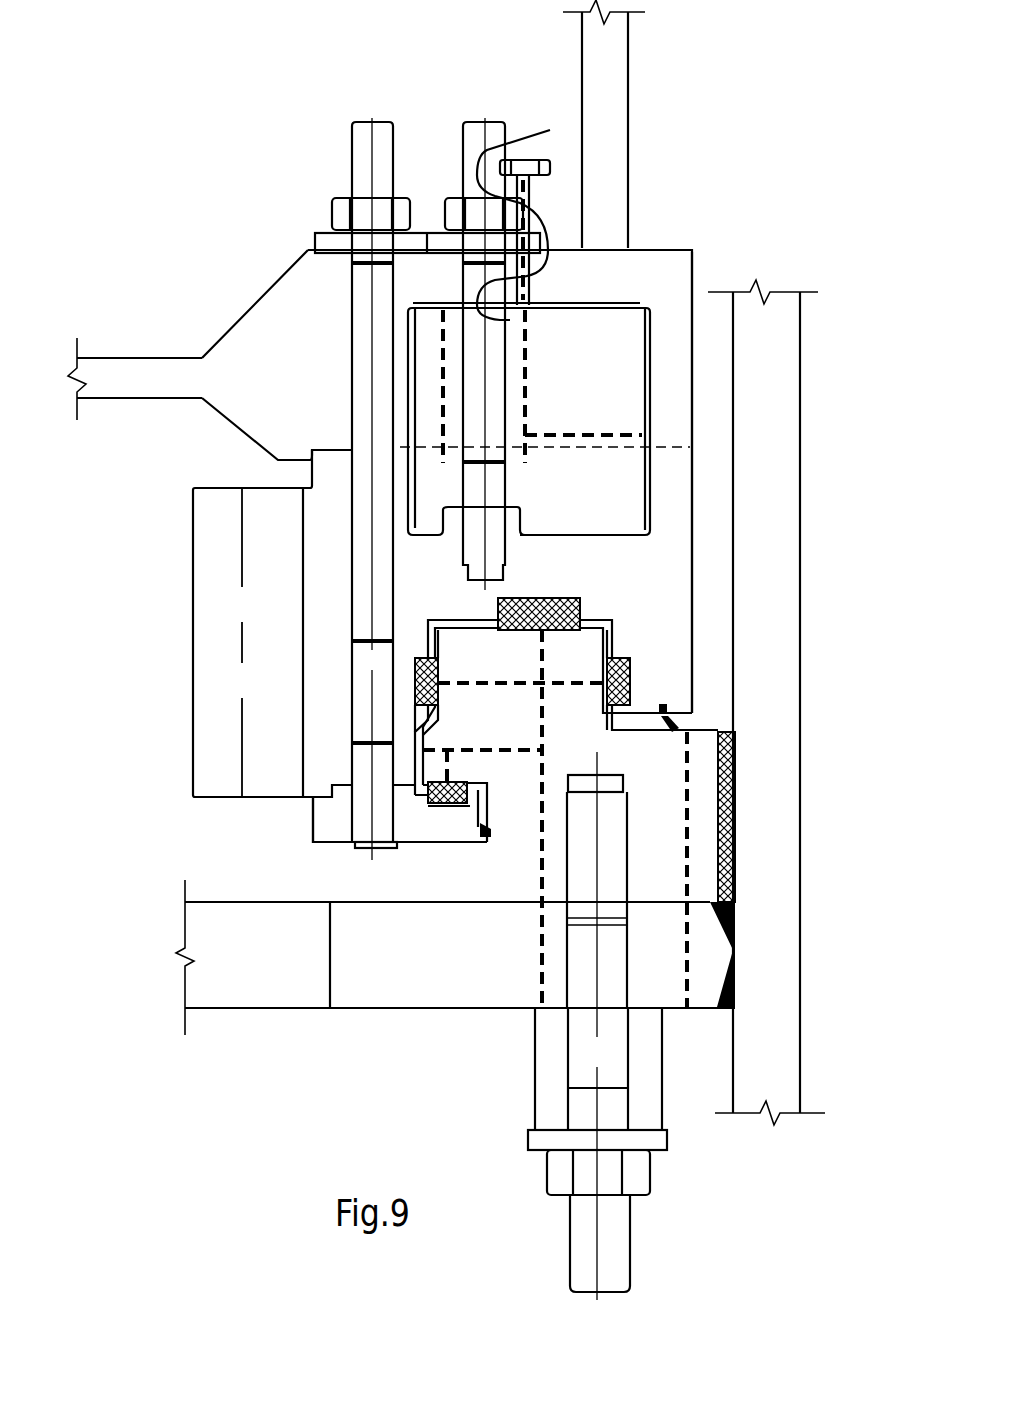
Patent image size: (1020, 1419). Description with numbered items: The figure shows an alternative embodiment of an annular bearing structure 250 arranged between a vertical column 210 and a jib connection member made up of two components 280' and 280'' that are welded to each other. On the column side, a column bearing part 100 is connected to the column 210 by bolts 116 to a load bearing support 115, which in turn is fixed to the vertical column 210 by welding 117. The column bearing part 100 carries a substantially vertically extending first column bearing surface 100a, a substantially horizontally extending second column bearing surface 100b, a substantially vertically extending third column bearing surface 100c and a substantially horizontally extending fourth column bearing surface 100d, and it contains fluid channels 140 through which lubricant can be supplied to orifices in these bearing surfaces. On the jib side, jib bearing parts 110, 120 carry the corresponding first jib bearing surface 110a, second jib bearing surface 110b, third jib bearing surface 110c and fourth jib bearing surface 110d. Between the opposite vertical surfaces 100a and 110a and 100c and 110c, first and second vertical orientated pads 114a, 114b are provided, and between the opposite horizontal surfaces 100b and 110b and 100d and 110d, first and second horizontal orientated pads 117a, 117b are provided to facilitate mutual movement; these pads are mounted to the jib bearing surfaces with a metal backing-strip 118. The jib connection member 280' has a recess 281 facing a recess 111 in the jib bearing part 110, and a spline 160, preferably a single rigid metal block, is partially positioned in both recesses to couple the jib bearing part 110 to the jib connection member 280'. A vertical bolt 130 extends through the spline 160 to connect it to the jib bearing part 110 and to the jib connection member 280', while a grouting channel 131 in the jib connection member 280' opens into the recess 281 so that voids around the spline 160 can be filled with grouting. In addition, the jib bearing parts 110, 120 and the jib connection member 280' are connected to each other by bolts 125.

The annular bearing structure 250 is at (222, 147).
The jib connection member component 280' is at (263, 326).
The jib connection member component 280'' is at (135, 355).
The recess 281 is at (648, 328).
The grouting channel 131 is at (535, 287).
The spline 160 is at (585, 371).
The vertical bolt 130 is at (545, 354).
The recess 111 is at (645, 525).
The jib bearing part 110 is at (566, 700).
The first jib bearing surface 110a is at (418, 668).
The second jib bearing surface 110b is at (567, 598).
The third jib bearing surface 110c is at (627, 662).
The fourth jib bearing surface 110d is at (444, 824).
The metal backing-strip 118 is at (533, 598).
The first horizontal orientated pad 117a is at (500, 612).
The second horizontal orientated pad 117b is at (430, 800).
The first vertical orientated pad 114a is at (415, 700).
The second vertical orientated pad 114b is at (630, 694).
The column bearing part 100 is at (547, 740).
The first column bearing surface 100a is at (440, 700).
The second column bearing surface 100b is at (522, 656).
The third column bearing surface 100c is at (607, 693).
The fourth column bearing surface 100d is at (462, 782).
The fluid channel 140 is at (542, 768).
The bolt 125 is at (371, 489).
The jib bearing part 120 is at (332, 819).
The load bearing support 115 is at (455, 957).
The bolt 116 is at (597, 1026).
The welding 117 is at (722, 1010).
The vertical column 210 is at (780, 735).